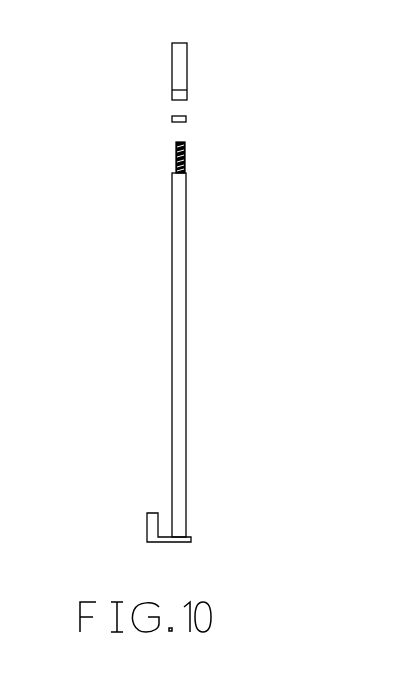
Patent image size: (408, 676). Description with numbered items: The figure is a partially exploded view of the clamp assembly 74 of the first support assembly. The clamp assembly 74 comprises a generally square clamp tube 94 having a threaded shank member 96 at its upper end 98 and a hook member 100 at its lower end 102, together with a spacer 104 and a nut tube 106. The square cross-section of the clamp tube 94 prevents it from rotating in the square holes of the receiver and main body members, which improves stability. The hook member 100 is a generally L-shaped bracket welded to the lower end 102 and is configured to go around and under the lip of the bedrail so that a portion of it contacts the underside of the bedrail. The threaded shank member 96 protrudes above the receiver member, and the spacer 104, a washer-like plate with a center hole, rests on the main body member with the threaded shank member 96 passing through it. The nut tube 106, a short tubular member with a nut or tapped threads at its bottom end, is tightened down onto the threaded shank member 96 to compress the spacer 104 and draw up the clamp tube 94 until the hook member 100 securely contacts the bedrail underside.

The clamp assembly 74 is at (253, 222).
The clamp tube 94 is at (183, 330).
The threaded shank member 96 is at (176, 159).
The upper end 98 is at (166, 188).
The hook member 100 is at (148, 527).
The lower end 102 is at (193, 518).
The spacer 104 is at (183, 118).
The nut tube 106 is at (178, 68).